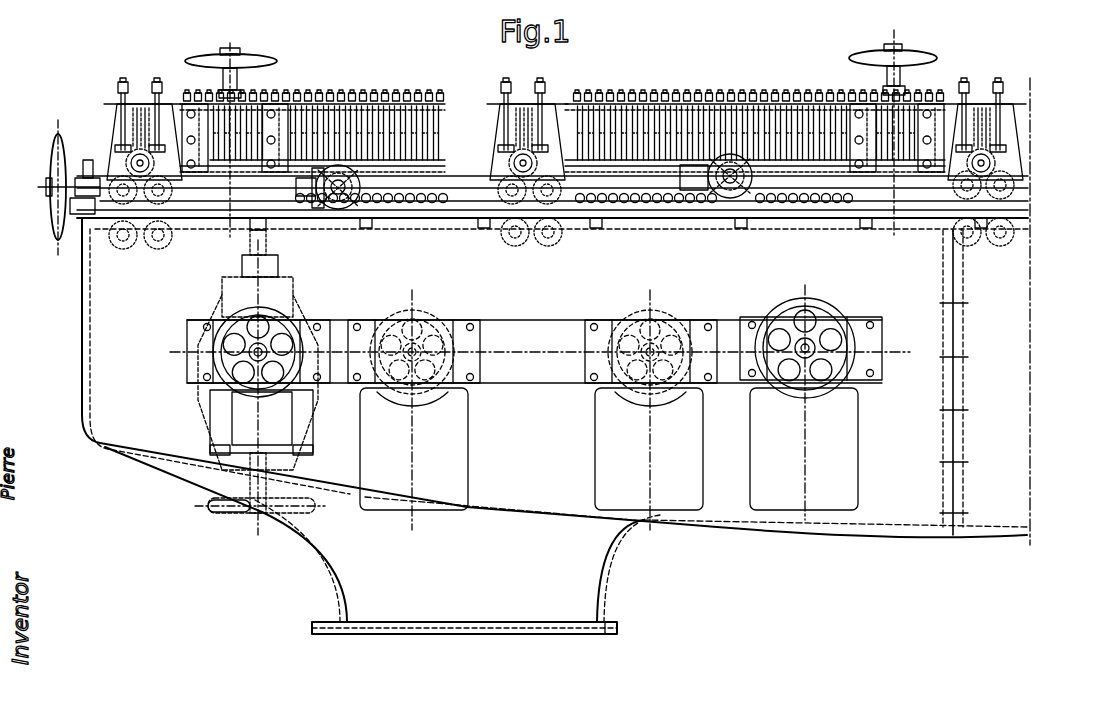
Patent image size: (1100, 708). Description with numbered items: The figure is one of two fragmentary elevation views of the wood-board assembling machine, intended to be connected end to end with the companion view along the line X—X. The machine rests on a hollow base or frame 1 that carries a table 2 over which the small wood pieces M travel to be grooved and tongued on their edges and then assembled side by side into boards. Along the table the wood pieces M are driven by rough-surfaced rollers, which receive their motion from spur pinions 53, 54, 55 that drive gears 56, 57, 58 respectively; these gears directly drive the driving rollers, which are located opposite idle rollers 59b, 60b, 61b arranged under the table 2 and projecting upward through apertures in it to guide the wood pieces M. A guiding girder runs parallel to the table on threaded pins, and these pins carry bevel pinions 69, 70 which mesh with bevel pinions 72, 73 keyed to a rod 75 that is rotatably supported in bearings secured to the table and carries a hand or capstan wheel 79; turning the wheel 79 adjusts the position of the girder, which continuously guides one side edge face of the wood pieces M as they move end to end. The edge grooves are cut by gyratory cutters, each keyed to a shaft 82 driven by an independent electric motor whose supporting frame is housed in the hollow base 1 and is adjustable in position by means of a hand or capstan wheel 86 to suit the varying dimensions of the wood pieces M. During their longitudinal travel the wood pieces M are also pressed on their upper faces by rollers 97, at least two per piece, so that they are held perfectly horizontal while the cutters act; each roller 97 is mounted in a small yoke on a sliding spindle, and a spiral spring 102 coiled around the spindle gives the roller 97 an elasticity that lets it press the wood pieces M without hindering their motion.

The base or frame 1 is at (100, 445).
The table 2 is at (87, 237).
The spur pinion 53 is at (997, 147).
The spur pinion 54 is at (552, 150).
The spur pinion 55 is at (122, 112).
The gear 56 is at (997, 170).
The gear 57 is at (548, 170).
The gear 58 is at (160, 180).
The idle roller 59b is at (970, 240).
The idle roller 60b is at (523, 217).
The idle roller 61b is at (157, 243).
The bevel pinion 69 is at (363, 170).
The bevel pinion 70 is at (739, 172).
The bevel pinion 72 is at (347, 171).
The bevel pinion 73 is at (712, 170).
The rod 75 is at (258, 178).
The hand or capstan wheel 79 is at (58, 140).
The shaft 82 is at (253, 240).
The hand or capstan wheel 86 is at (217, 513).
The pressing roller 97 is at (400, 203).
The spiral spring 102 is at (487, 130).
The wood pieces M is at (77, 207).
The connecting line X— X is at (1034, 309).